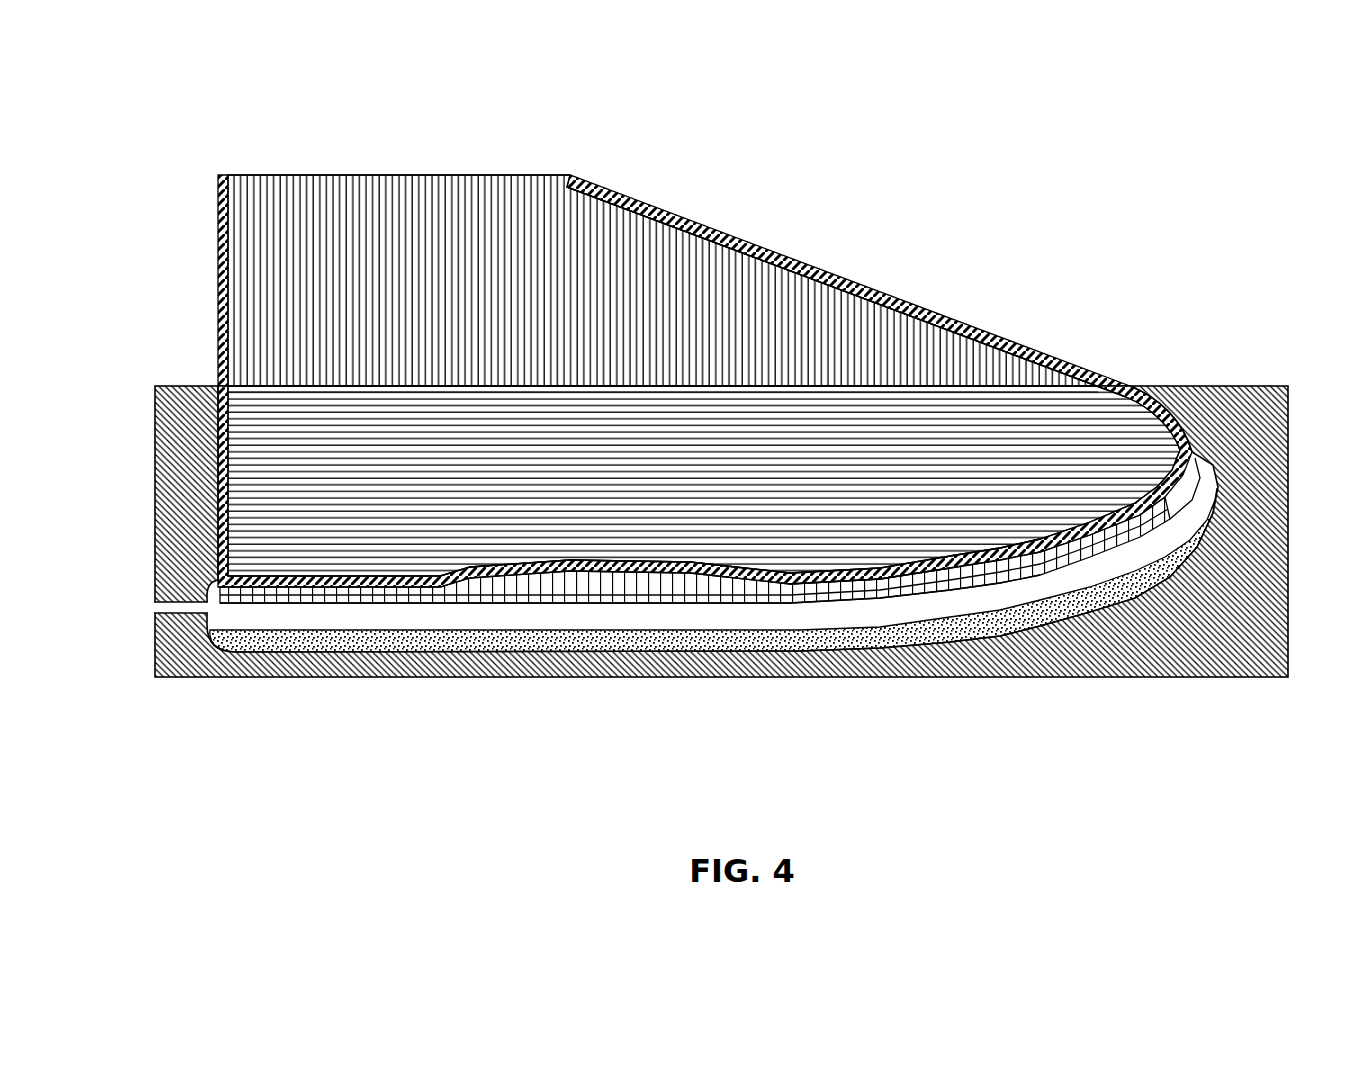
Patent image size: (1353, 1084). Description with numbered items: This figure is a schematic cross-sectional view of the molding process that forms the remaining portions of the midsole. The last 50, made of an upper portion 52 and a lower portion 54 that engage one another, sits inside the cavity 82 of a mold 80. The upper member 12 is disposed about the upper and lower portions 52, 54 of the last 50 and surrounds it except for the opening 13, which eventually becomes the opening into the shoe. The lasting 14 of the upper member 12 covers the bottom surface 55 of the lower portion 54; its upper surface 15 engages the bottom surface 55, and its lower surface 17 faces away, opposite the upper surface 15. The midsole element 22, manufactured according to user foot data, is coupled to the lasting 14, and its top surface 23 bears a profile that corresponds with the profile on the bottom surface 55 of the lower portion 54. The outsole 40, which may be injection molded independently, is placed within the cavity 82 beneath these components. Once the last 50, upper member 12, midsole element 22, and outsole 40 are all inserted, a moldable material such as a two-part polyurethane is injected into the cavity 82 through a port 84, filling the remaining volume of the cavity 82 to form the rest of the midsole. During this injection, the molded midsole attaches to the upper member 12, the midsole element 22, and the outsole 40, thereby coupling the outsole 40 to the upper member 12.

The upper member 12 is at (833, 274).
The opening 13 is at (303, 170).
The lasting 14 is at (558, 582).
The upper surface 15 is at (738, 567).
The lower surface 17 is at (862, 583).
The midsole element 22 is at (650, 612).
The top surface 23 is at (922, 561).
The outsole 40 is at (1030, 627).
The last 50 is at (642, 194).
The upper portion 52 is at (713, 247).
The lower portion 54 is at (272, 565).
The bottom surface 55 is at (825, 575).
The mold 80 is at (1193, 386).
The cavity 82 is at (387, 616).
The port 84 is at (168, 598).